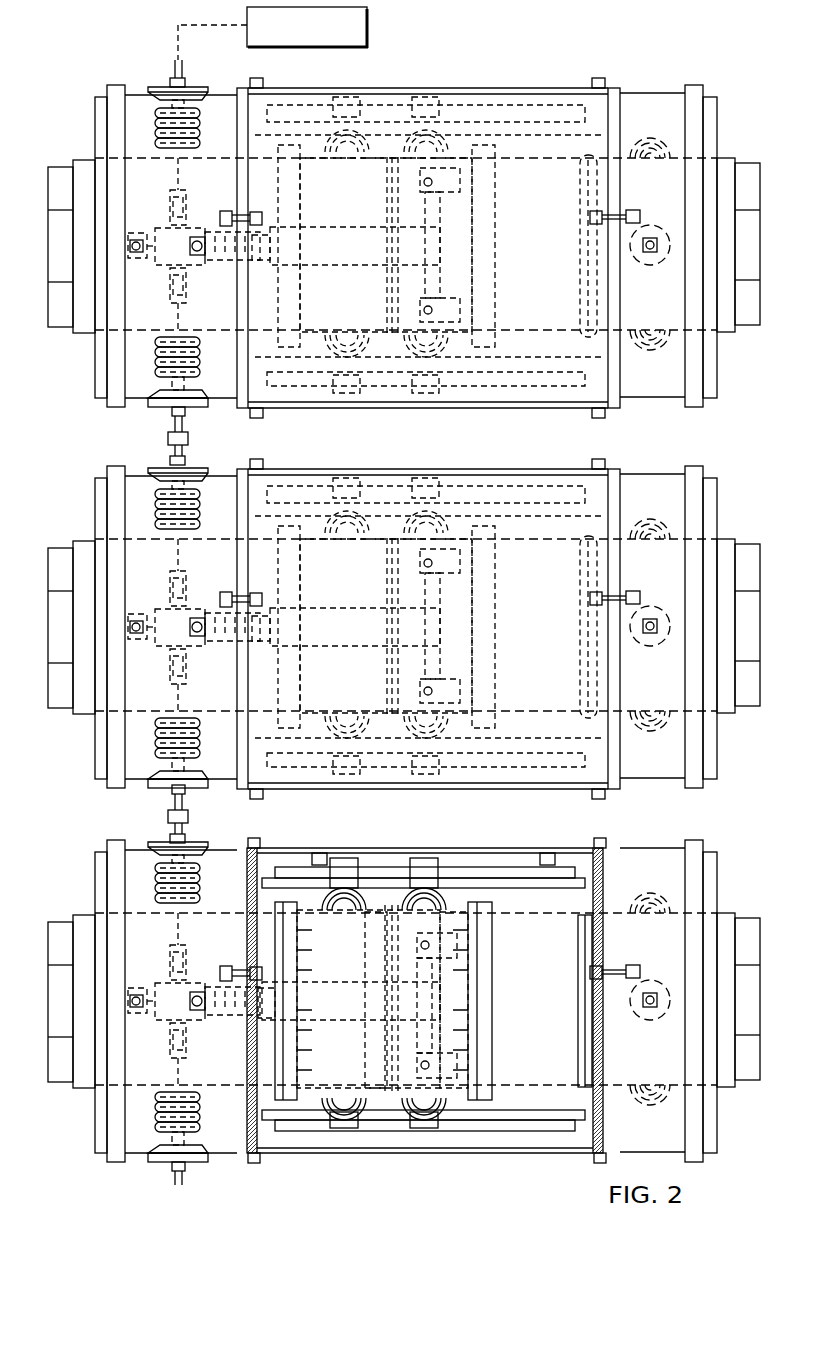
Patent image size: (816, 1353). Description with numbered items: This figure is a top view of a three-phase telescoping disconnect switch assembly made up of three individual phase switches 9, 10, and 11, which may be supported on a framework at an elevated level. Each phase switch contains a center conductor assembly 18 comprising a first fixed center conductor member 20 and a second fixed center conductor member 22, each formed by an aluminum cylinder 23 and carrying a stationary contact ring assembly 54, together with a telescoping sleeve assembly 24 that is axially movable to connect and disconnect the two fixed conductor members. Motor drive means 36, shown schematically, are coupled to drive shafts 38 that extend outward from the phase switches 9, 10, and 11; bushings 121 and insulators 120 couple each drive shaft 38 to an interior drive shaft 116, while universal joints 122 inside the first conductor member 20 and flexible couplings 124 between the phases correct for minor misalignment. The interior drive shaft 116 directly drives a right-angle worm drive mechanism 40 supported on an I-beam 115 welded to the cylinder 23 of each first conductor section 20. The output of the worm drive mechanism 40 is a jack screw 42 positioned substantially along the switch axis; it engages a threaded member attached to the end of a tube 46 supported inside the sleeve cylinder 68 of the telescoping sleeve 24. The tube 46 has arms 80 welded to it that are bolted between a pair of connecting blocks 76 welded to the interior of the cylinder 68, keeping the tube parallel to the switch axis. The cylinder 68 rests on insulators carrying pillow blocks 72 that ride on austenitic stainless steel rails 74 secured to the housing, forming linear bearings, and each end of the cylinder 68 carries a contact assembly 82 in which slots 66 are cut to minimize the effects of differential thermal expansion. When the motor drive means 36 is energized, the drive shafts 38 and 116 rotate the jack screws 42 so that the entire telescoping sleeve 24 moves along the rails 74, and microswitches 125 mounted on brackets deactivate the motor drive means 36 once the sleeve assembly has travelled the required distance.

The phase switch 9 is at (786, 191).
The phase switch 10 is at (790, 573).
The phase switch 11 is at (783, 955).
The center conductor assembly 18 is at (537, 293).
The first fixed center conductor member 20 is at (88, 160).
The second fixed center conductor member 22 is at (722, 165).
The aluminum cylinder 23 is at (223, 172).
The telescoping sleeve assembly 24 is at (465, 225).
The motor drive means 36 is at (367, 18).
The drive shaft 38 is at (175, 72).
The right-angle worm drive mechanism 40 is at (172, 985).
The jack screw 42 is at (236, 1013).
The tube 46 is at (348, 1028).
The stationary contact ring assembly 54 is at (580, 1058).
The slots 66 is at (316, 935).
The aluminum cylinder 68 is at (448, 958).
The pillow block 72 is at (338, 860).
The rails 74 is at (388, 885).
The connecting blocks 76 is at (425, 935).
The arms 80 is at (428, 968).
The contact assembly 82 is at (283, 965).
The I-beam 115 is at (150, 1020).
The interior drive shaft 116 is at (170, 940).
The insulators 120 is at (156, 895).
The bushings 121 is at (175, 412).
The universal joints 122 is at (180, 968).
The flexible couplings 124 is at (188, 439).
The microswitches 125 is at (320, 858).